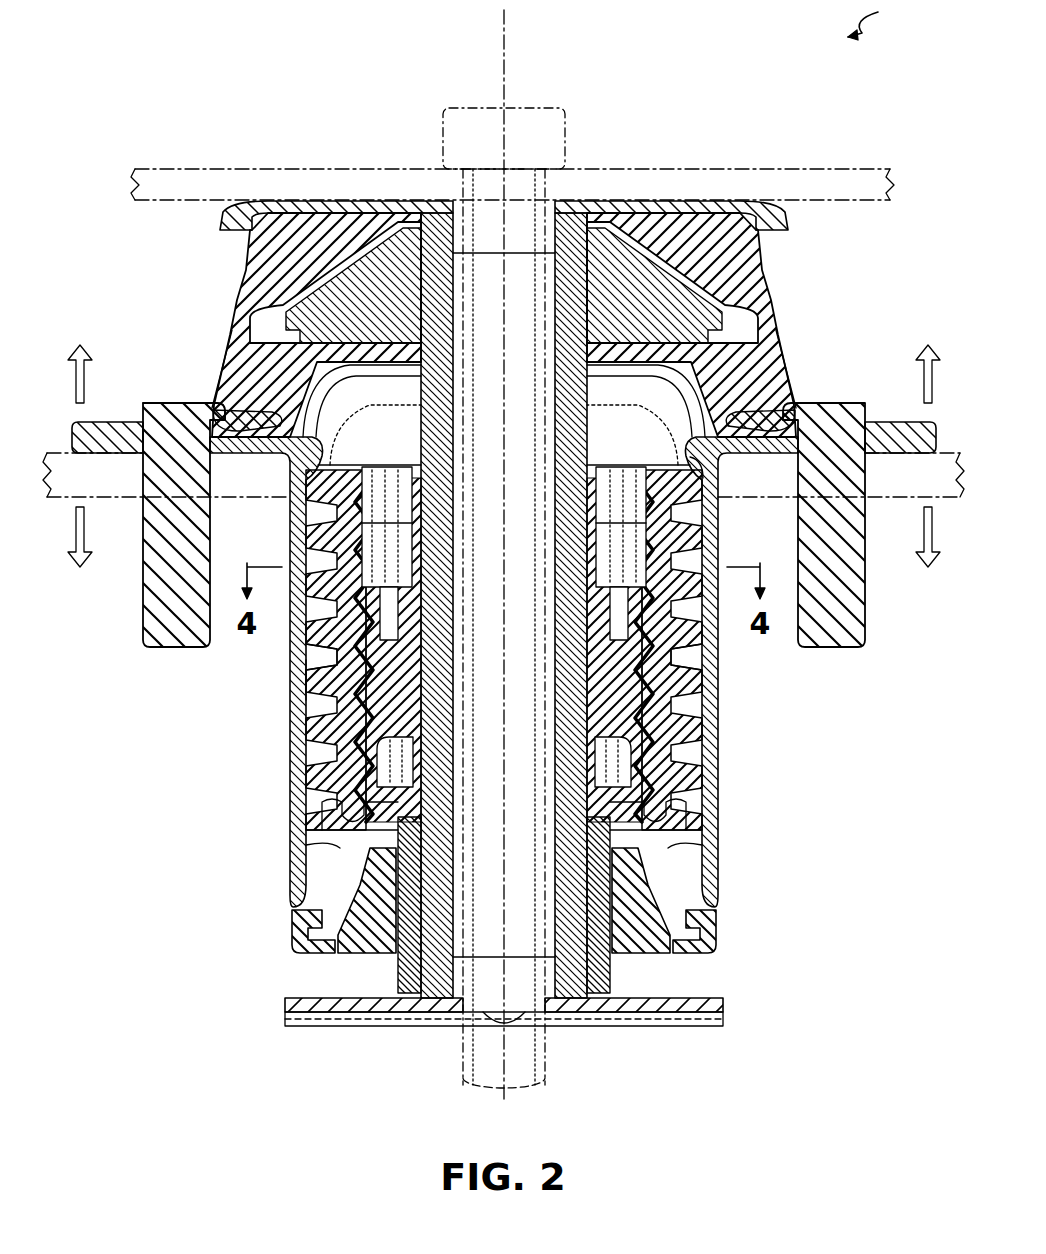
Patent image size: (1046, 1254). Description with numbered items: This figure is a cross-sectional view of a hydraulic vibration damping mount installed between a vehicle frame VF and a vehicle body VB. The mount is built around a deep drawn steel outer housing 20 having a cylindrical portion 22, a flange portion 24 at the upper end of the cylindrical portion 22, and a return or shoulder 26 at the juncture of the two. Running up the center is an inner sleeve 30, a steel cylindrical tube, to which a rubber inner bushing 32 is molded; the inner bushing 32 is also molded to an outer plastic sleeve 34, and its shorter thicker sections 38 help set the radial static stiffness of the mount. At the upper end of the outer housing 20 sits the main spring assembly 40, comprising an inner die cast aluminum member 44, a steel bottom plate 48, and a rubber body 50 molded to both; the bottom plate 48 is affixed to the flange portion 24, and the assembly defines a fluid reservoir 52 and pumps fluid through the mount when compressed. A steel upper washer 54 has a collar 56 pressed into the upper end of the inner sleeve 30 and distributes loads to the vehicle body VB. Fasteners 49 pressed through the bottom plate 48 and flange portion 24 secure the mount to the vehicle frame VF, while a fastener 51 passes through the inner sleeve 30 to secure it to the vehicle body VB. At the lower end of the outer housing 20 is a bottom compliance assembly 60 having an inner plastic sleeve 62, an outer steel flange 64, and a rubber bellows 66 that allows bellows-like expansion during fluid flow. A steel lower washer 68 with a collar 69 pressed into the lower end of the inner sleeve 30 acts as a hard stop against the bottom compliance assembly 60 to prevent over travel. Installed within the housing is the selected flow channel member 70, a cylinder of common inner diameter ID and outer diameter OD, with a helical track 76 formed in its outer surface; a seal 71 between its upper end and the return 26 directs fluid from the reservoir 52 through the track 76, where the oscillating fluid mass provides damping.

The outer housing 20 is at (508, 593).
The cylindrical portion 22 is at (718, 720).
The flange portion 24 is at (130, 453).
The return or shoulder 26 is at (660, 460).
The inner sleeve 30 is at (572, 222).
The inner bushing 32 is at (630, 725).
The outer plastic sleeve 34 is at (372, 686).
The shorter thicker sections 38 is at (614, 610).
The main spring assembly 40 is at (770, 282).
The inner die cast aluminum member 44 is at (655, 270).
The bottom plate 48 is at (115, 422).
The fasteners 49 is at (143, 607).
The rubber body 50 is at (783, 330).
The fastener 51 is at (478, 106).
The fluid reservoir 52 is at (330, 392).
The upper washer 54 is at (290, 200).
The collar 56 is at (540, 232).
The bottom compliance assembly 60 is at (505, 896).
The inner plastic sleeve 62 is at (410, 972).
The outer steel flange 64 is at (300, 927).
The rubber bellows 66 is at (645, 925).
The lower washer 68 is at (285, 1007).
The collar 69 is at (535, 1013).
The flow channel member 70 is at (325, 800).
The seal 71 is at (706, 474).
The track 76 is at (318, 752).
The vehicle body VB is at (175, 168).
The vehicle frame VF is at (116, 498).
The inner diameter ID is at (366, 490).
The outer diameter OD is at (338, 680).